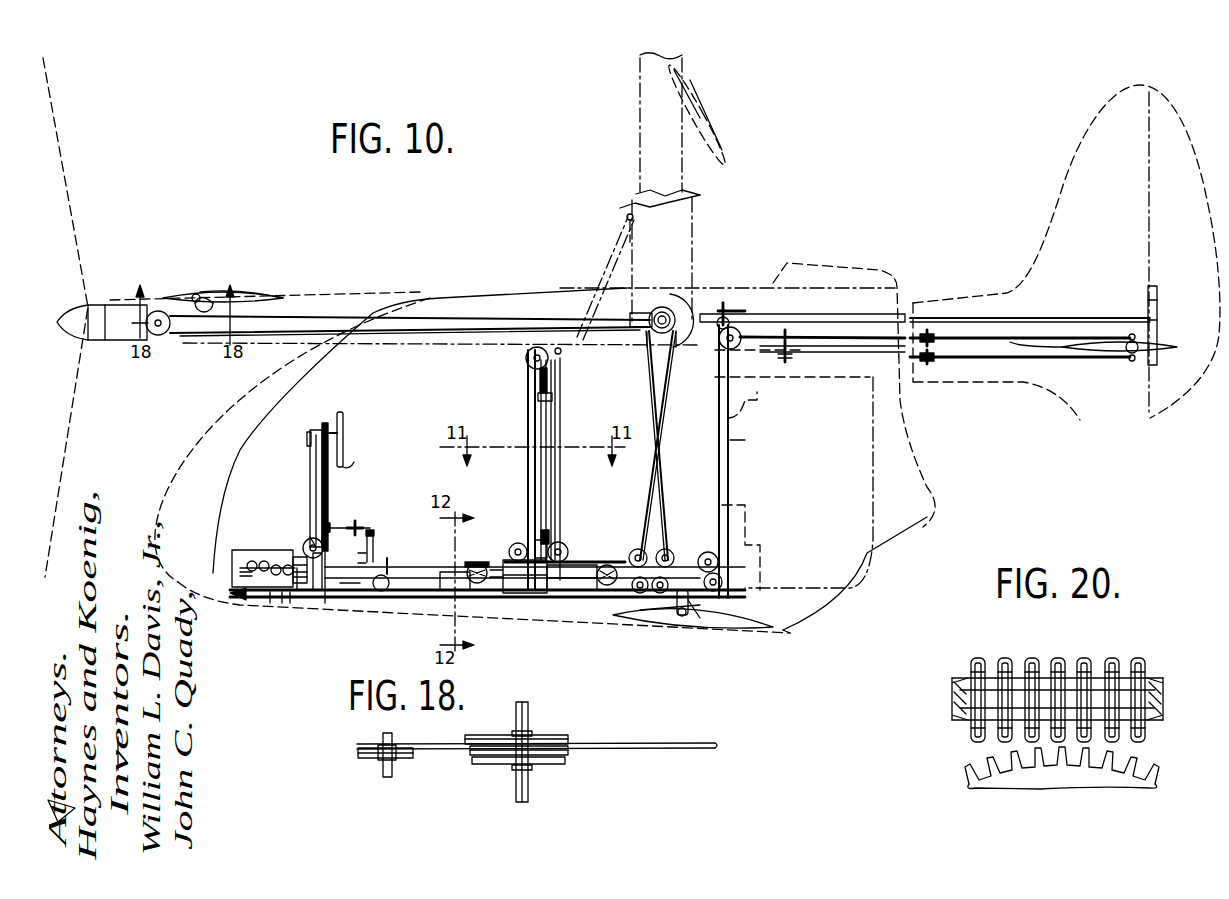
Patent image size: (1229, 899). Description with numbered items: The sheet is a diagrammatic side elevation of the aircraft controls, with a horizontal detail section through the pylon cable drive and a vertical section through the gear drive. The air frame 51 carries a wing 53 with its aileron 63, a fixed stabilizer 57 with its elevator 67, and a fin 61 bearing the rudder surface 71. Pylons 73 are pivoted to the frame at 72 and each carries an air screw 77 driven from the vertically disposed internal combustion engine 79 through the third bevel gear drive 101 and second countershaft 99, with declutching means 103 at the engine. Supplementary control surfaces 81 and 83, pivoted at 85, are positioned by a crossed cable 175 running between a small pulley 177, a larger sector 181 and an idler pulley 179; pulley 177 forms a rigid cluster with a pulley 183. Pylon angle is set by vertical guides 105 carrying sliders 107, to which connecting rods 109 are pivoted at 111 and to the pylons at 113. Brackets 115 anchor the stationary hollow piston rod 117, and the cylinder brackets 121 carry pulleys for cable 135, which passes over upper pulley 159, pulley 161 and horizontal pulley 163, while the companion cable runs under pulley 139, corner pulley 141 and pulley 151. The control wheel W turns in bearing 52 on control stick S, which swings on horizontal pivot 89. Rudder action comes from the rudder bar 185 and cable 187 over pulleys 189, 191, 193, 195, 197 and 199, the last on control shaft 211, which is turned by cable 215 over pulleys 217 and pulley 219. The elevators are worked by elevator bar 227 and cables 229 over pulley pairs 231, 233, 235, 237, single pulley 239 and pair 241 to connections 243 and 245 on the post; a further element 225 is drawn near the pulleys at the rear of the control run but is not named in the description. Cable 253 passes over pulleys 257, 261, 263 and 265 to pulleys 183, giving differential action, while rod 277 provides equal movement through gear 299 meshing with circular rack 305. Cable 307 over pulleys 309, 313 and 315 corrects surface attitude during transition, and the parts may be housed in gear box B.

In FIG. 10, the air frame 51 is at (212, 410).
In FIG. 10, the bearing 52 is at (314, 430).
In FIG. 10, the wing 53 is at (646, 622).
In FIG. 10, the fixed stabilizer 57 is at (1062, 352).
In FIG. 10, the fin 61 is at (1067, 193).
In FIG. 10, the aileron 63 is at (740, 630).
In FIG. 10, the elevator 67 is at (1160, 351).
In FIG. 10, the rudder surface 71 is at (1197, 178).
In FIG. 10, the pivot 72 is at (662, 305).
In FIG. 10, the pylon 73 is at (692, 192).
In FIG. 10, the air screw 77 is at (77, 215).
In FIG. 10, the internal combustion engine 79 is at (870, 553).
In FIG. 10, the supplementary control surface 81 is at (249, 293).
In FIG. 10, the supplementary control surface 83 is at (233, 290).
In FIG. 10, the pivot 85 is at (196, 293).
In FIG. 18, the pivot 85 is at (525, 733).
In FIG. 10, the horizontal pivot 89 is at (303, 542).
In FIG. 10, the second countershaft 99 is at (766, 314).
In FIG. 10, the third bevel gear drive 101 is at (796, 320).
In FIG. 10, the declutching means 103 is at (815, 372).
In FIG. 10, the vertical guide 105 is at (527, 412).
In FIG. 10, the slider 107 is at (552, 386).
In FIG. 10, the connecting rod 109 is at (606, 256).
In FIG. 10, the pivot 111 is at (552, 378).
In FIG. 10, the pivot 113 is at (627, 214).
In FIG. 10, the bracket 115 is at (457, 600).
In FIG. 10, the stationary hollow piston rod 117 is at (582, 604).
In FIG. 10, the bracket 121 is at (520, 604).
In FIG. 10, the cable 135 is at (528, 373).
In FIG. 10, the pulley 139 is at (566, 547).
In FIG. 10, the corner pulley 141 is at (583, 548).
In FIG. 10, the pulley 151 is at (480, 598).
In FIG. 10, the upper pulley 159 is at (527, 356).
In FIG. 10, the pulley 161 is at (515, 545).
In FIG. 10, the horizontal pulley 163 is at (477, 563).
In FIG. 10, the crossed cable 175 is at (306, 316).
In FIG. 18, the crossed cable 175 is at (640, 741).
In FIG. 10, the small pulley 177 is at (645, 327).
In FIG. 10, the idler pulley 179 is at (160, 335).
In FIG. 18, the idler pulley 179 is at (362, 757).
In FIG. 10, the sector 181 is at (206, 296).
In FIG. 18, the sector 181 is at (548, 737).
In FIG. 10, the pulley 183 is at (655, 312).
In FIG. 10, the rudder bar 185 is at (1158, 320).
In FIG. 10, the cable 187 is at (1036, 322).
In FIG. 10, the pulley 189 is at (736, 303).
In FIG. 10, the pulley 191 is at (724, 316).
In FIG. 10, the pulley 193 is at (735, 580).
In FIG. 10, the pulley 195 is at (322, 604).
In FIG. 10, the pulley 197 is at (300, 600).
In FIG. 10, the pulley 199 is at (275, 599).
In FIG. 10, the control shaft 211 is at (284, 604).
In FIG. 10, the cable 215 is at (290, 544).
In FIG. 10, the pulley 217 is at (310, 537).
In FIG. 10, the pulley 219 is at (324, 423).
In FIG. 10, the link 225 is at (696, 622).
In FIG. 10, the elevator bar 227 is at (1133, 362).
In FIG. 10, the cable 229 is at (716, 424).
In FIG. 10, the pulley pair 231 is at (932, 356).
In FIG. 10, the pulley pair 233 is at (742, 346).
In FIG. 10, the pulley pair 235 is at (722, 560).
In FIG. 10, the pulley pair 237 is at (390, 570).
In FIG. 10, the single pulley 239 is at (373, 538).
In FIG. 10, the pulley pair 241 is at (343, 528).
In FIG. 10, the connection 243 is at (331, 524).
In FIG. 10, the connection 245 is at (352, 600).
In FIG. 10, the cable 253 is at (655, 412).
In FIG. 10, the pulley 257 is at (236, 561).
In FIG. 10, the fixed pulley 261 is at (248, 556).
In FIG. 10, the fixed pulley 263 is at (262, 556).
In FIG. 10, the fixed pulley 265 is at (639, 548).
In FIG. 10, the rod 277 is at (316, 604).
In FIG. 20, the gear 299 is at (1032, 775).
In FIG. 20, the circular rack 305 is at (1050, 662).
In FIG. 10, the cable 307 is at (658, 457).
In FIG. 10, the pulley 309 is at (232, 596).
In FIG. 10, the pulley 313 is at (679, 618).
In FIG. 10, the pulley 315 is at (668, 305).
In FIG. 10, the gear box B is at (230, 577).
In FIG. 10, the control stick S is at (312, 488).
In FIG. 10, the control wheel W is at (343, 415).